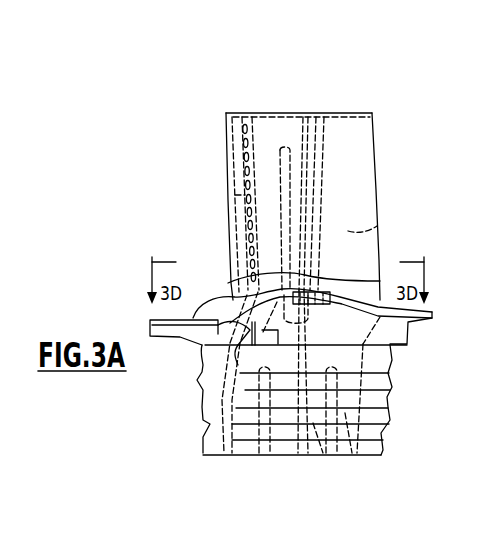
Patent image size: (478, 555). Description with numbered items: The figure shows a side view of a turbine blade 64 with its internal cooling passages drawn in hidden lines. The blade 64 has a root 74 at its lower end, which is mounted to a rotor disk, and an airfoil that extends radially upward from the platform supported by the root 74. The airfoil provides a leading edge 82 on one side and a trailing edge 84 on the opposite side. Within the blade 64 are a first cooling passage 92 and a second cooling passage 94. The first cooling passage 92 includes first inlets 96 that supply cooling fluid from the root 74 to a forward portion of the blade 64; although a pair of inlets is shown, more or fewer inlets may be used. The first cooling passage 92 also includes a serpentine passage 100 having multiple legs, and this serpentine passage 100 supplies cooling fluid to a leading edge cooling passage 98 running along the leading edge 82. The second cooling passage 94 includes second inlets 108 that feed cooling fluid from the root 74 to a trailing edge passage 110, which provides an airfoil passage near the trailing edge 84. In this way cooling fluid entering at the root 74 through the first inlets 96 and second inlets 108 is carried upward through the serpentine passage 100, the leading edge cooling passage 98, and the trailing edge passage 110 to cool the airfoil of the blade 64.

The turbine blade 64 is at (201, 178).
The leading edge 82 is at (226, 158).
The trailing edge 84 is at (376, 170).
The serpentine passage 100 is at (278, 133).
The leading edge cooling passage 98 is at (230, 233).
The trailing edge passage 110 is at (377, 225).
The root 74 is at (205, 381).
The first cooling passage 92 is at (224, 396).
The second cooling passage 94 is at (368, 383).
The first inlets 96 is at (288, 447).
The second inlets 108 is at (322, 450).